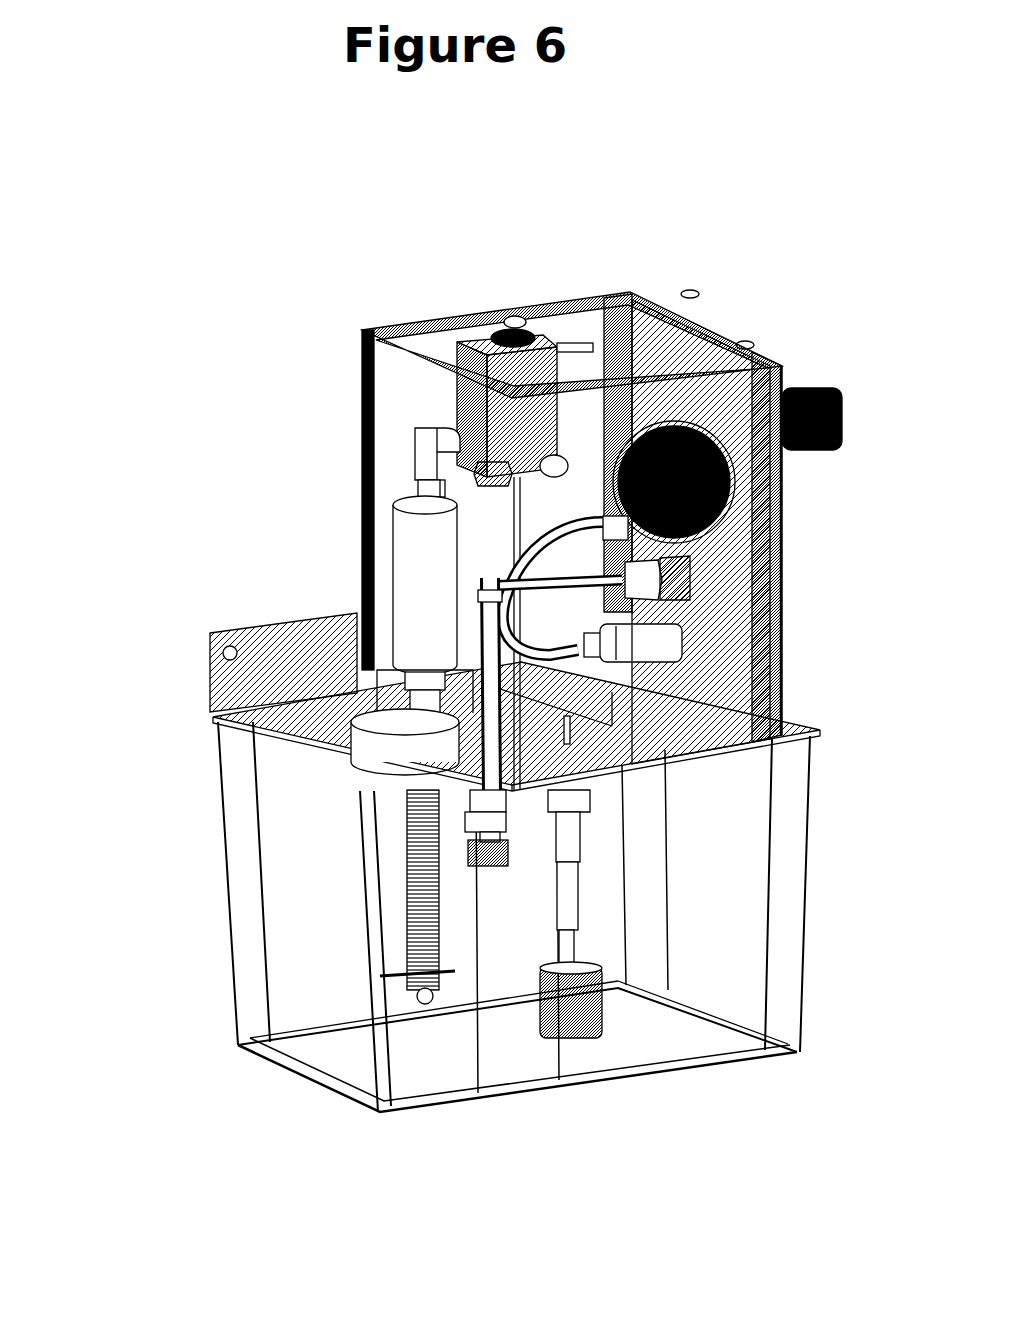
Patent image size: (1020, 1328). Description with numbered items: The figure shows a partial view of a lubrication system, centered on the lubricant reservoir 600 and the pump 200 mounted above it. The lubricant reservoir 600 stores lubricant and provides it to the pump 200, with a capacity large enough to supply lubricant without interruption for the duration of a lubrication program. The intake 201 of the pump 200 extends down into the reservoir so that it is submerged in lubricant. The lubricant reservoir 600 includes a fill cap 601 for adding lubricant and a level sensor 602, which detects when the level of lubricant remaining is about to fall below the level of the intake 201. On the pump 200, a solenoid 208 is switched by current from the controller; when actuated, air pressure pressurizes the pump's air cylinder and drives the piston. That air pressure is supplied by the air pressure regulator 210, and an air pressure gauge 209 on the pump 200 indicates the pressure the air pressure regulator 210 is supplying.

The pump 200 is at (378, 560).
The intake 201 is at (424, 1032).
The solenoid 208 is at (440, 400).
The air pressure gauge 209 is at (716, 530).
The air pressure regulator 210 is at (810, 373).
The lubricant reservoir 600 is at (206, 950).
The fill cap 601 is at (393, 723).
The level sensor 602 is at (618, 1024).